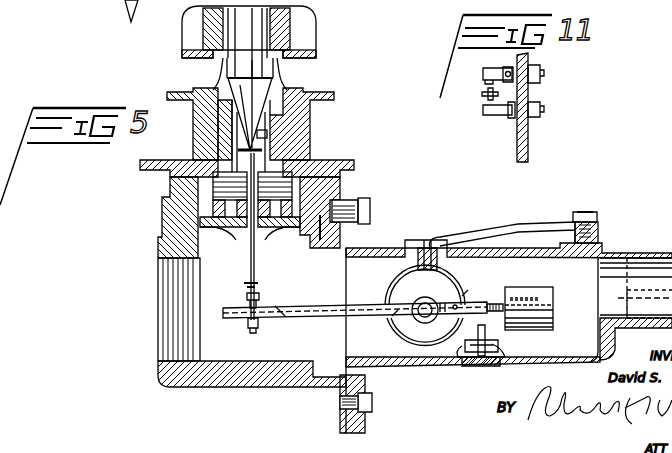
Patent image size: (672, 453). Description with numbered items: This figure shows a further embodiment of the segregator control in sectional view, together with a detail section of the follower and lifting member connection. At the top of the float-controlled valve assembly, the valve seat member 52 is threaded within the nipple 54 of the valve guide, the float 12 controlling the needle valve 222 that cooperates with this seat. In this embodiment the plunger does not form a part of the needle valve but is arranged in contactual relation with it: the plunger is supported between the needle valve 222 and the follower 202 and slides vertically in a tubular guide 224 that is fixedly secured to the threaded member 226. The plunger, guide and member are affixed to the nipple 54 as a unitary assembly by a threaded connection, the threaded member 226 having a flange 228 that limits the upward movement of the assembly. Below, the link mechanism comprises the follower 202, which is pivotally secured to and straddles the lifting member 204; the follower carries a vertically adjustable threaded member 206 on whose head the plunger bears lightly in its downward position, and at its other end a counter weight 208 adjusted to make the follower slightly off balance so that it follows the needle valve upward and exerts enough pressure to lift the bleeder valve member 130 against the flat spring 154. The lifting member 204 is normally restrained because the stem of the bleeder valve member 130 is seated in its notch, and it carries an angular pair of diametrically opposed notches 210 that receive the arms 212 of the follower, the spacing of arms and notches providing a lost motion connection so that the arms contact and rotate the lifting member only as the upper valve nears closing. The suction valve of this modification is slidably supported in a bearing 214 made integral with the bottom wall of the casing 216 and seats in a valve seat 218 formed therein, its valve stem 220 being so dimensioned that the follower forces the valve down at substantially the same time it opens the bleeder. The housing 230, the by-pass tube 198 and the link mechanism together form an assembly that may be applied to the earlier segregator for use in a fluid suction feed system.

The float 12 is at (305, 314).
The valve seat member 52 is at (215, 92).
The nipple 54 is at (300, 122).
The bleeder valve member 130 is at (448, 244).
The flat spring 154 is at (518, 222).
The by-pass tube 198 is at (636, 309).
The follower 202 is at (283, 312).
The lifting member 204 is at (402, 330).
The threaded member 206 is at (259, 295).
The counter weight 208 is at (540, 298).
The notches 210 is at (500, 283).
The arms 212 is at (62, 6).
The bearing 214 is at (499, 347).
The casing 216 is at (529, 301).
The valve seat 218 is at (510, 362).
The valve stem 220 is at (462, 352).
The needle valve 222 is at (280, 82).
The tubular guide 224 is at (246, 264).
The threaded member 226 is at (222, 225).
The flange 228 is at (290, 226).
The housing 230 is at (315, 243).